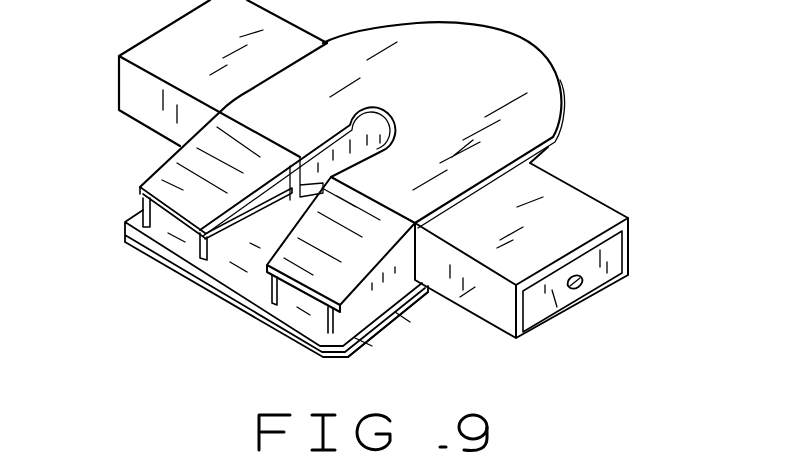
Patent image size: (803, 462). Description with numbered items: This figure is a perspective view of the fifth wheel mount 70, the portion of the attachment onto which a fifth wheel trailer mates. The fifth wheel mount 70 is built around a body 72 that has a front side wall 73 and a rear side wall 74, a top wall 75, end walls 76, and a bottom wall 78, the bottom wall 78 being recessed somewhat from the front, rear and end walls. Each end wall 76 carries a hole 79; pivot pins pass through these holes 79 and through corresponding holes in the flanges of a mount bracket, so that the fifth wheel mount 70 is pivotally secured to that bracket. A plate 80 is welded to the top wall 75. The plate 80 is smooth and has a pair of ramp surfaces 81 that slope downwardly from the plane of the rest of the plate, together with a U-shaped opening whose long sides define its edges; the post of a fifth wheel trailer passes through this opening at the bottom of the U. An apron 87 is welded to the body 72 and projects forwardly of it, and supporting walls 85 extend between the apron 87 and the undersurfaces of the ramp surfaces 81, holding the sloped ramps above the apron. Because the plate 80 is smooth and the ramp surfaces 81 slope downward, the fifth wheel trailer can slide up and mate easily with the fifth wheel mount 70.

The fifth wheel mount 70 is at (571, 253).
The body 72 is at (500, 314).
The front side wall 73 is at (473, 287).
The rear side wall 74 is at (632, 245).
The top wall 75 is at (543, 192).
The end wall 76 is at (552, 303).
The bottom wall 78 is at (387, 330).
The hole 79 is at (582, 287).
The plate 80 is at (522, 72).
The ramp surface 81 is at (157, 171).
The supporting wall 85 is at (360, 147).
The apron 87 is at (238, 275).